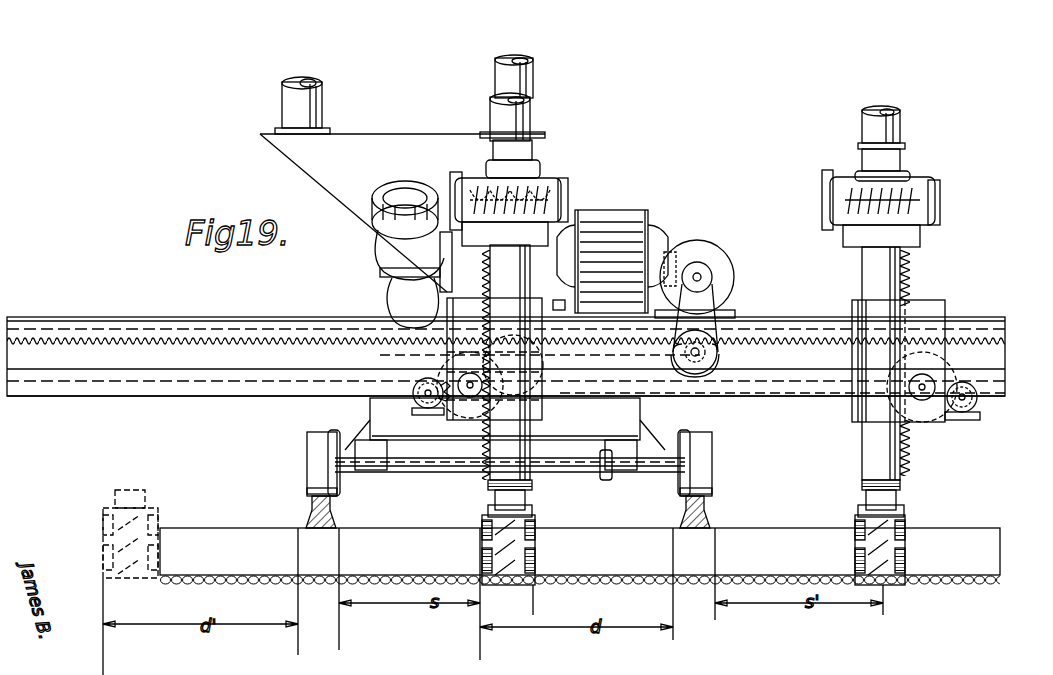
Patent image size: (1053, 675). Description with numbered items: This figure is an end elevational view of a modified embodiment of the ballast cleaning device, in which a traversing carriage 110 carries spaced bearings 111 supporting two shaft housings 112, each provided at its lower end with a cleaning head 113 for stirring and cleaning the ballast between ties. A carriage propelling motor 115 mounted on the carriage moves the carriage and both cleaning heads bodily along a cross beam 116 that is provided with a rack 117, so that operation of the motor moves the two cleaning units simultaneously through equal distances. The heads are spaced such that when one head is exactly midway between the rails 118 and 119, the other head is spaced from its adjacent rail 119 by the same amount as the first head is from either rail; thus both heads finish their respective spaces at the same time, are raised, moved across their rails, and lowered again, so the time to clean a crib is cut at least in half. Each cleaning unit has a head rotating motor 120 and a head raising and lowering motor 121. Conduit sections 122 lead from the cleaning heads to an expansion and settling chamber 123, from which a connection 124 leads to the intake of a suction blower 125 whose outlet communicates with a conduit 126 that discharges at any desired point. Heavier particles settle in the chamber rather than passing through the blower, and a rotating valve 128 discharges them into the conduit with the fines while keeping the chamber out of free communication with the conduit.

The traversing carriage 110 is at (780, 404).
The spaced bearings 111 is at (555, 292).
The shaft housings 112 is at (505, 470).
The cleaning head 113 is at (148, 506).
The carriage propelling motor 115 is at (695, 252).
The cross beam 116 is at (242, 378).
The rack 117 is at (206, 345).
The rail 118 is at (340, 512).
The rail 119 is at (690, 510).
The head rotating motor 120 is at (532, 180).
The head raising and lowering motor 121 is at (405, 397).
The conduit sections 122 is at (314, 110).
The expansion and settling chamber 123 is at (306, 152).
The connection 124 is at (405, 240).
The suction blower 125 is at (406, 281).
The conduit 126 is at (545, 352).
The rotating valve 128 is at (396, 299).